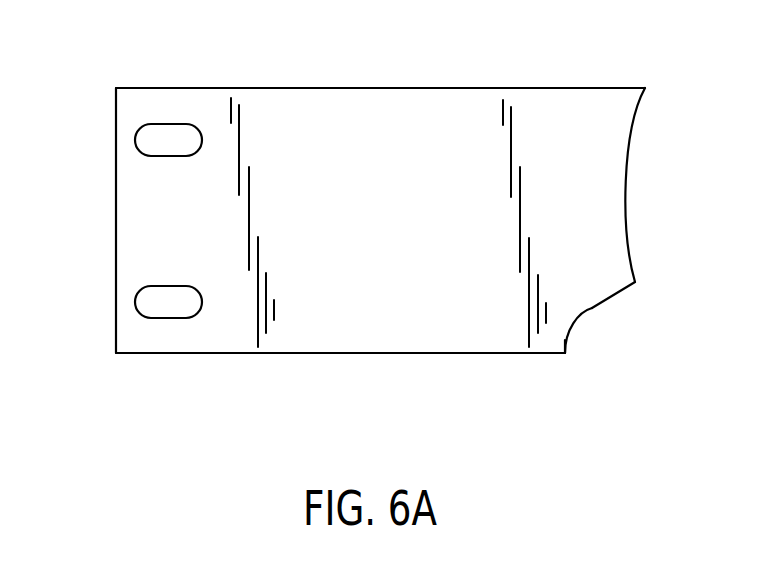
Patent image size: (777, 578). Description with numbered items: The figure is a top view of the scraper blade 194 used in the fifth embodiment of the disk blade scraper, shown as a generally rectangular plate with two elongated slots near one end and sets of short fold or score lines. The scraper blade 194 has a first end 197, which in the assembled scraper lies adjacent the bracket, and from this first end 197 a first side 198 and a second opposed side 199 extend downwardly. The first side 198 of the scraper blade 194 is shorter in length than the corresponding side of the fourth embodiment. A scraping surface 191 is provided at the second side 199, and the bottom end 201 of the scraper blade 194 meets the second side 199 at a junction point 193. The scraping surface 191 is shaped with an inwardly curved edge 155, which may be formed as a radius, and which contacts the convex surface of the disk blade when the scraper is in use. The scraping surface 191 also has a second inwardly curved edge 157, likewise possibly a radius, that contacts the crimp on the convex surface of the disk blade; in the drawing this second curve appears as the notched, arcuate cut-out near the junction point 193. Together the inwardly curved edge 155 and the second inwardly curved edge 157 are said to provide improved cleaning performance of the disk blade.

The first end 197 is at (278, 88).
The first side 198 is at (116, 222).
The bottom end 201 is at (183, 353).
The scraper blade 194 is at (318, 393).
The inwardly curved edge 155 is at (632, 235).
The second opposed side 199 is at (632, 197).
The scraping surface 191 is at (632, 262).
The second inwardly curved edge 157 is at (592, 310).
The junction point 193 is at (578, 382).